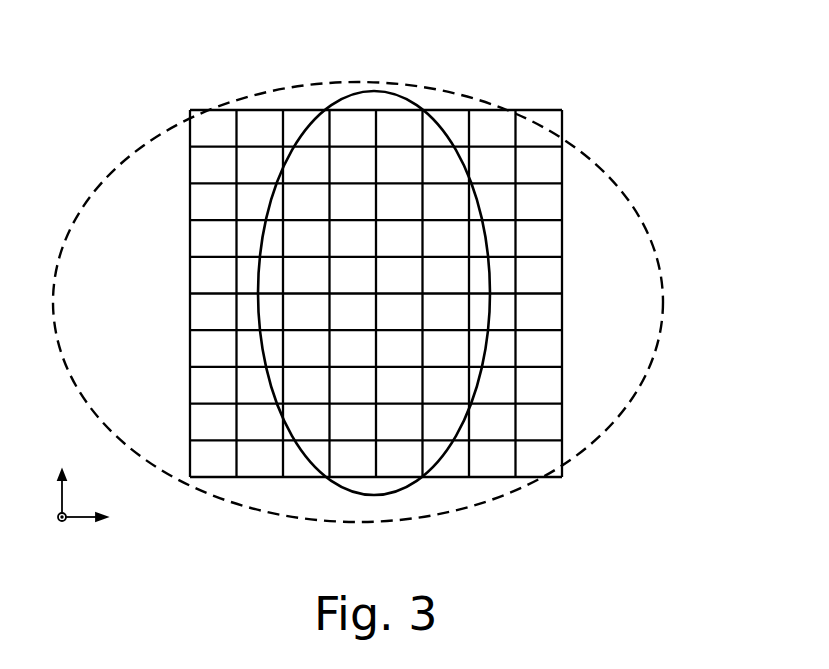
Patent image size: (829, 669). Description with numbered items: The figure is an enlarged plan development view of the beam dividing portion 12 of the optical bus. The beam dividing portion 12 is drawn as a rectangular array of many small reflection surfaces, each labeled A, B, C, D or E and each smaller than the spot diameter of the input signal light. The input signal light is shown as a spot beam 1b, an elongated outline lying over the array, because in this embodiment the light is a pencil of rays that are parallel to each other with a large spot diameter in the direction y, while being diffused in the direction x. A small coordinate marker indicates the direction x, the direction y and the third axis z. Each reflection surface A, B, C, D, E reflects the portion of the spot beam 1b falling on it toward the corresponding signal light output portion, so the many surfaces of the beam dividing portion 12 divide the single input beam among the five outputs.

The spot beam 1b is at (413, 101).
The beam dividing portion 12 is at (553, 102).
The direction x is at (95, 517).
The direction y is at (62, 479).
The z-axis of coordinate system z is at (54, 528).